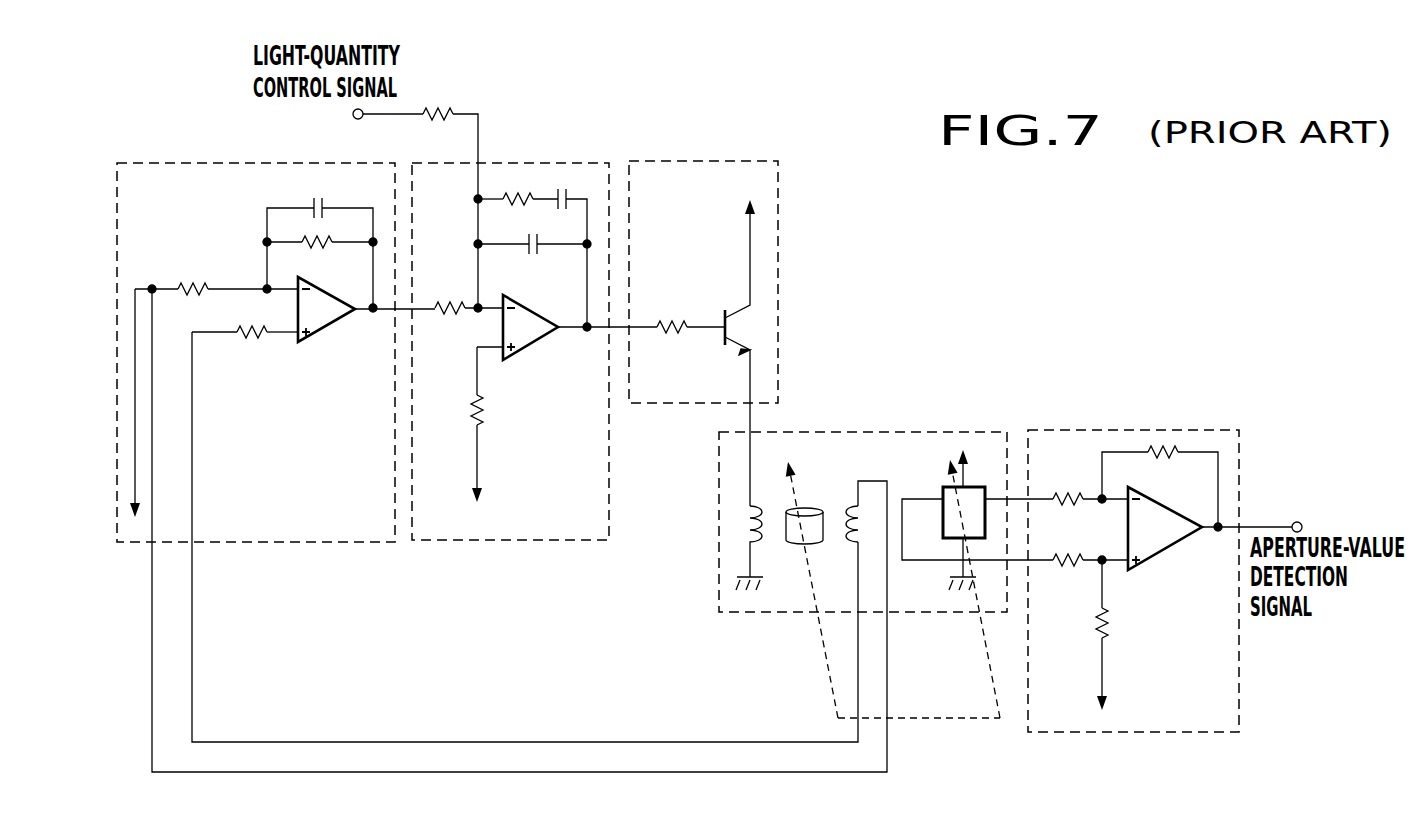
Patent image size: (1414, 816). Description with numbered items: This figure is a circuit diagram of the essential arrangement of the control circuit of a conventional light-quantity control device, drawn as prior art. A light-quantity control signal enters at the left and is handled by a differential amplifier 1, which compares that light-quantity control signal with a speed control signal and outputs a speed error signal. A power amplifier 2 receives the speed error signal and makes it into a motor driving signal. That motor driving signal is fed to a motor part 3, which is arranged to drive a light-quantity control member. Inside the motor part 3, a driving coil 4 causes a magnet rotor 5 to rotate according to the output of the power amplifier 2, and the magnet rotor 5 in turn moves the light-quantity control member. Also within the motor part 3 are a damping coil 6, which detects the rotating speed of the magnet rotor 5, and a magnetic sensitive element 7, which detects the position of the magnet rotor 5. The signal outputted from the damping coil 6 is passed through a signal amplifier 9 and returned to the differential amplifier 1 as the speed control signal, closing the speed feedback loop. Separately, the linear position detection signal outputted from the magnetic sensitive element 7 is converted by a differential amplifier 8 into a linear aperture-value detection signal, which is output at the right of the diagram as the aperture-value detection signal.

The differential amplifier 1 is at (593, 163).
The power amplifier 2 is at (757, 161).
The motor part 3 is at (960, 432).
The driving coil 4 is at (750, 517).
The magnet rotor 5 is at (815, 505).
The damping coil 6 is at (865, 528).
The magnetic sensitive element 7 is at (943, 492).
The differential amplifier 8 is at (1210, 430).
The signal amplifier 9 is at (133, 163).